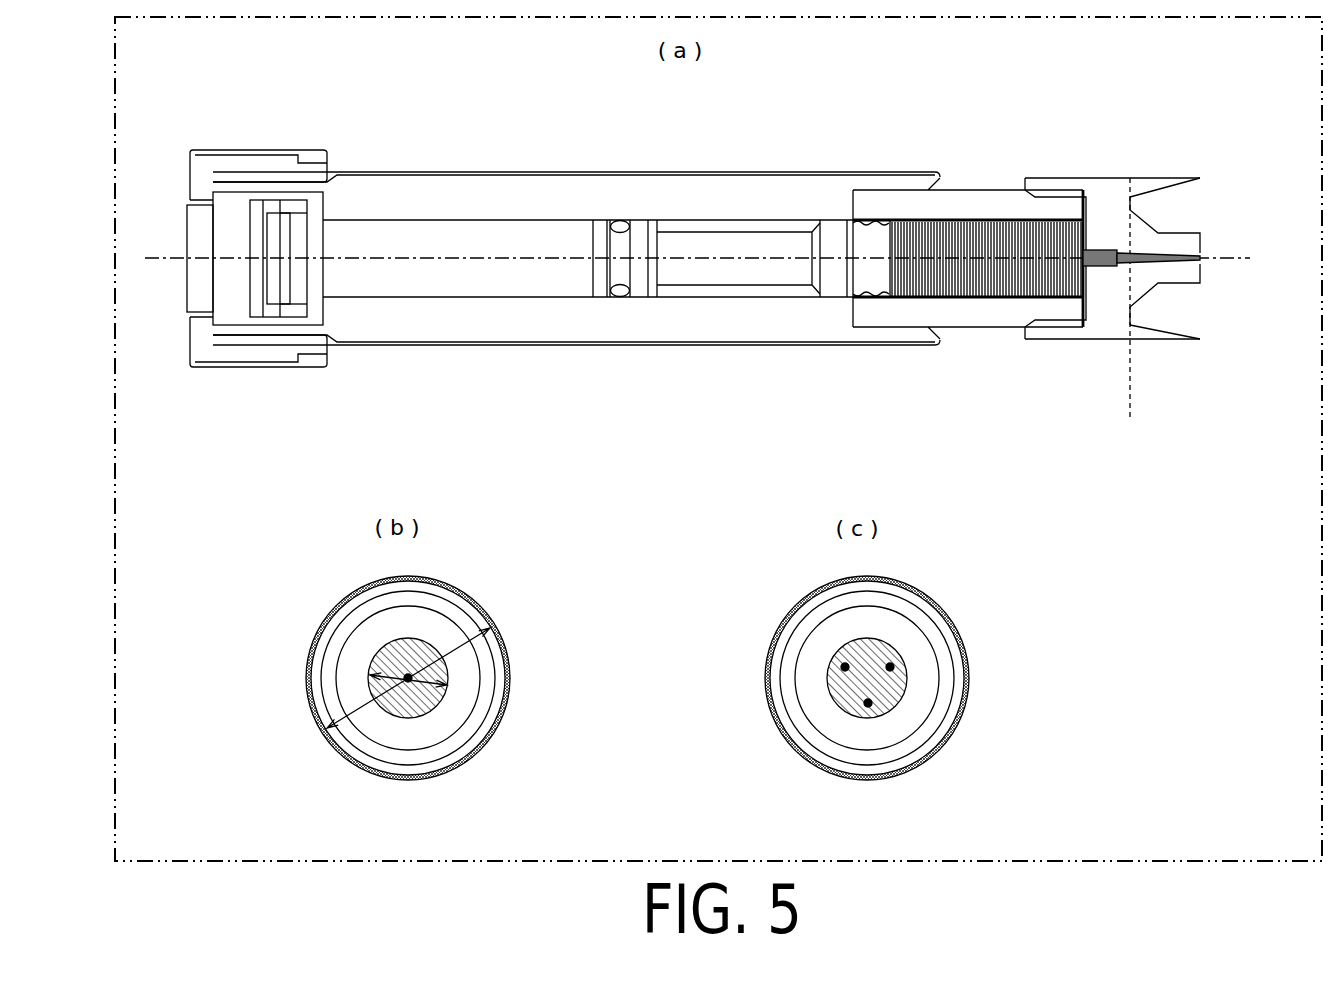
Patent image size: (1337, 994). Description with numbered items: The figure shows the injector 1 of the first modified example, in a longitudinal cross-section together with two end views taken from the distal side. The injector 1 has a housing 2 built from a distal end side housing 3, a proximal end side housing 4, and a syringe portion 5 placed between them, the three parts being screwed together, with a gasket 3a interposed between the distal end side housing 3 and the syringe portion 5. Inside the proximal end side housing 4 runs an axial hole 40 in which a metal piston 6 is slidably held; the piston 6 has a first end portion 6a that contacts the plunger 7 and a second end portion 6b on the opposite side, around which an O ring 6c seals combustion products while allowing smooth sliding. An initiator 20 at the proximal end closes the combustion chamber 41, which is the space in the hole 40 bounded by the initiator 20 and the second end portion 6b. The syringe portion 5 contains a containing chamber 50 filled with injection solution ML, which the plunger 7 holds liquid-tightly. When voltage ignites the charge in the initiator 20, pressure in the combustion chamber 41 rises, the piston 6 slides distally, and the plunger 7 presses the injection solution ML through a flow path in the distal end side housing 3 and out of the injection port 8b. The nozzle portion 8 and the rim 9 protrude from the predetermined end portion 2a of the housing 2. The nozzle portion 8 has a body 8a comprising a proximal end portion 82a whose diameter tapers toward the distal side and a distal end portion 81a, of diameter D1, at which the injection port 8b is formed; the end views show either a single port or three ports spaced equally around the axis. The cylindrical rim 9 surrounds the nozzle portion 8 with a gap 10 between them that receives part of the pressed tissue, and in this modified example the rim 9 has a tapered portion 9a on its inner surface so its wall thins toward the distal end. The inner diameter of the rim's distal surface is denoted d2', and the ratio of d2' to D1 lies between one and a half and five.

The injector 1 is at (1190, 466).
The housing 2 is at (945, 293).
The predetermined end portion 2a is at (1130, 318).
The distal end side housing 3 is at (1112, 272).
The gasket 3a is at (1080, 208).
The proximal end side housing 4 is at (576, 269).
The syringe portion 5 is at (968, 267).
The piston 6 is at (699, 213).
The first end portion 6a is at (835, 240).
The second end portion 6b is at (600, 242).
The O ring 6c is at (620, 224).
The plunger 7 is at (880, 248).
The nozzle portion 8 is at (1195, 231).
The body 8a is at (1189, 289).
The injection port 8b is at (1200, 258).
The rim 9 is at (1196, 231).
The tapered portion 9a is at (1170, 198).
The gap 10 is at (1165, 210).
The initiator 20 is at (203, 218).
The hole 40 is at (780, 228).
The combustion chamber 41 is at (413, 247).
The containing chamber 50 is at (977, 228).
The distal end portion 81a is at (1180, 276).
The proximal end portion 82a is at (1143, 283).
The injection solution ML is at (998, 245).
The diameter of the distal end portion D1 is at (440, 707).
The inner diameter of the distal end surface of the rim d2' is at (472, 692).